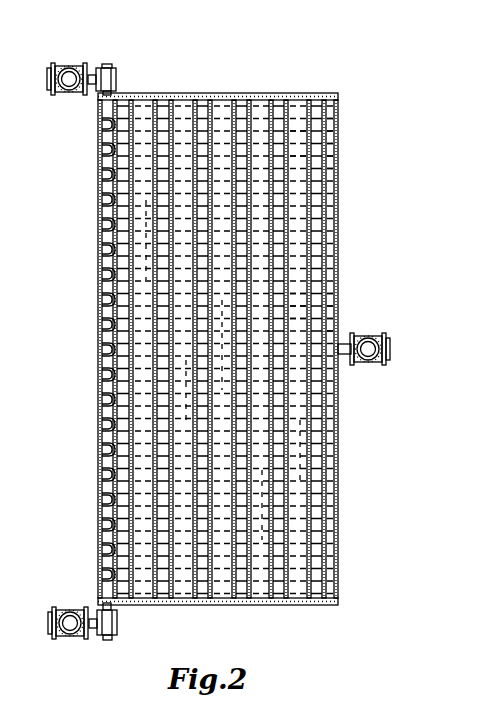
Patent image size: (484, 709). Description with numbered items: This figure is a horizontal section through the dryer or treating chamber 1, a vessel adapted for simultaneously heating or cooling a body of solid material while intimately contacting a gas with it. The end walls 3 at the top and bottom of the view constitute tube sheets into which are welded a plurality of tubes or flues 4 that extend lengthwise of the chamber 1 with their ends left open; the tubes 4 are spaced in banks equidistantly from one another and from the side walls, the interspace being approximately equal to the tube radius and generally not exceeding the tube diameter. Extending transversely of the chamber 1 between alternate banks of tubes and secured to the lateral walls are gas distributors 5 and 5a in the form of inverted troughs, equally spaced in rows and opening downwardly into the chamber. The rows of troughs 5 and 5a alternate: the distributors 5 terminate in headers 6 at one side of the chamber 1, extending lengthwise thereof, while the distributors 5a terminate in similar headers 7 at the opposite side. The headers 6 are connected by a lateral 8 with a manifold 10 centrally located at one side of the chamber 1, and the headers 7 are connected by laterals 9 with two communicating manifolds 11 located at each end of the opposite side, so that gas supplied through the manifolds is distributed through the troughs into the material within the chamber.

The dryer or treating chamber 1 is at (338, 430).
The end wall 3 is at (290, 90).
The tube or flue 4 is at (296, 276).
The gas distributor 5 is at (325, 326).
The gas distributor 5a is at (326, 173).
The header 6 is at (336, 390).
The header 7 is at (108, 310).
The lateral 8 is at (343, 355).
The lateral 9 is at (93, 85).
The manifold 10 is at (372, 335).
The manifold 11 is at (72, 63).